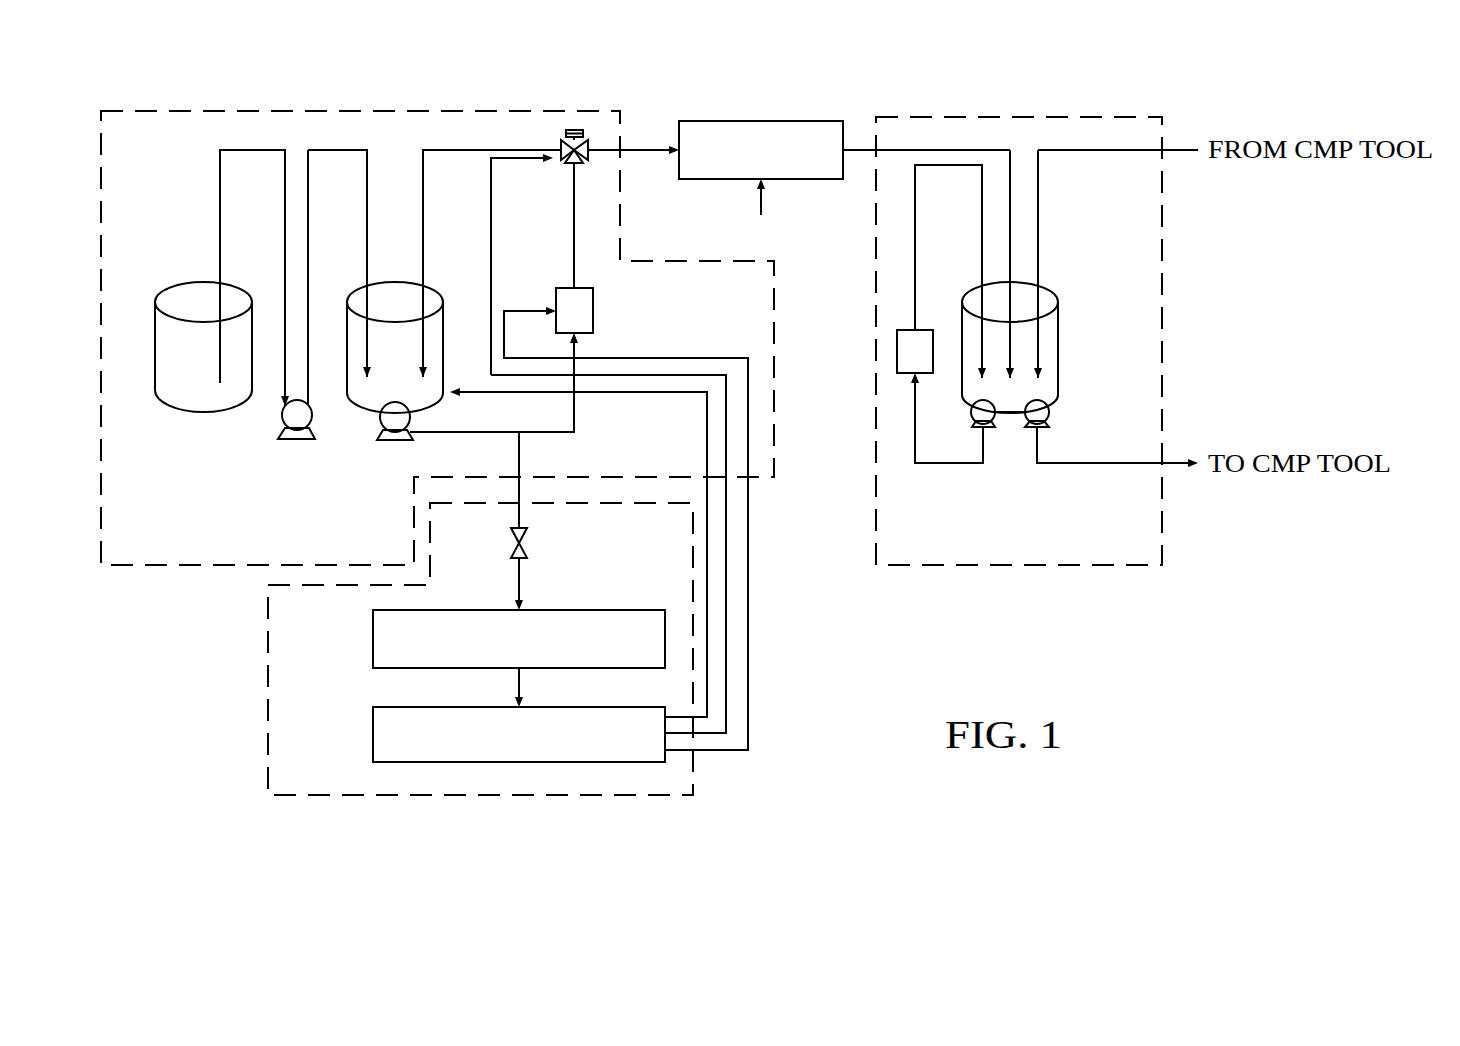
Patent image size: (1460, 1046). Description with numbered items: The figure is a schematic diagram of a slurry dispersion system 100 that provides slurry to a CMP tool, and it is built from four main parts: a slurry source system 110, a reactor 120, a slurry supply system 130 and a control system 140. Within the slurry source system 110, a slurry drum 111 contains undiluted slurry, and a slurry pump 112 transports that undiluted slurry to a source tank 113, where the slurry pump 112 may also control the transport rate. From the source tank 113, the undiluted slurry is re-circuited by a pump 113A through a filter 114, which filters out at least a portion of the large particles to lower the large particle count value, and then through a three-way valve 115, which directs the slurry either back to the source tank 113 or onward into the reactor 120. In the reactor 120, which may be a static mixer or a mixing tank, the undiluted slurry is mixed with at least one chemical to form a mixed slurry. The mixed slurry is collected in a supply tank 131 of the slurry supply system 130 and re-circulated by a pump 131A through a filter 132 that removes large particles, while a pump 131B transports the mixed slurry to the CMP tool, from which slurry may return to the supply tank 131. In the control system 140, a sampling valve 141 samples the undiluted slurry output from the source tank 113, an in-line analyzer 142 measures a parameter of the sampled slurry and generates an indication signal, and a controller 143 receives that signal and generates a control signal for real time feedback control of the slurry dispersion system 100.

The slurry dispersion system 100 is at (1124, 66).
The slurry source system 110 is at (230, 110).
The slurry drum 111 is at (205, 412).
The slurry pump 112 is at (298, 440).
The source tank 113 is at (355, 405).
The pump 113A is at (398, 440).
The filter 114 is at (593, 313).
The three-way valve 115 is at (565, 128).
The reactor 120 is at (760, 121).
The slurry supply system 130 is at (980, 117).
The supply tank 131 is at (1058, 350).
The pump 131A is at (995, 427).
The pump 131B is at (1047, 423).
The filter 132 is at (897, 350).
The control system 140 is at (268, 690).
The sampling valve 141 is at (527, 548).
The in-line analyzer 142 is at (373, 638).
The controller 143 is at (373, 733).